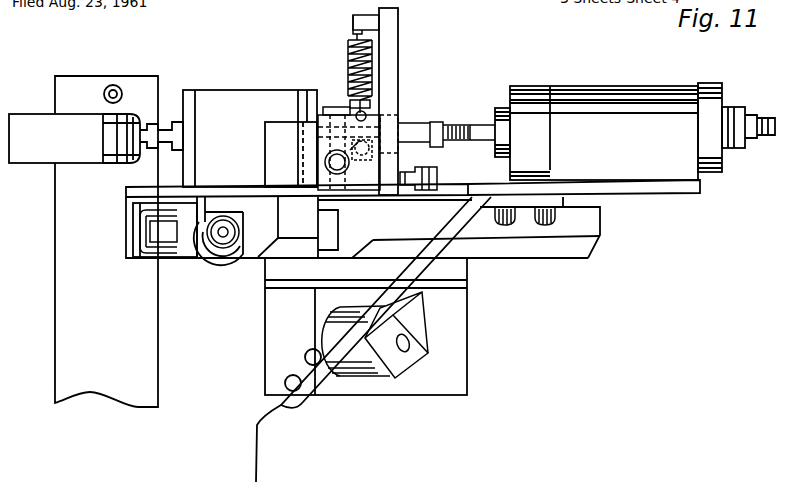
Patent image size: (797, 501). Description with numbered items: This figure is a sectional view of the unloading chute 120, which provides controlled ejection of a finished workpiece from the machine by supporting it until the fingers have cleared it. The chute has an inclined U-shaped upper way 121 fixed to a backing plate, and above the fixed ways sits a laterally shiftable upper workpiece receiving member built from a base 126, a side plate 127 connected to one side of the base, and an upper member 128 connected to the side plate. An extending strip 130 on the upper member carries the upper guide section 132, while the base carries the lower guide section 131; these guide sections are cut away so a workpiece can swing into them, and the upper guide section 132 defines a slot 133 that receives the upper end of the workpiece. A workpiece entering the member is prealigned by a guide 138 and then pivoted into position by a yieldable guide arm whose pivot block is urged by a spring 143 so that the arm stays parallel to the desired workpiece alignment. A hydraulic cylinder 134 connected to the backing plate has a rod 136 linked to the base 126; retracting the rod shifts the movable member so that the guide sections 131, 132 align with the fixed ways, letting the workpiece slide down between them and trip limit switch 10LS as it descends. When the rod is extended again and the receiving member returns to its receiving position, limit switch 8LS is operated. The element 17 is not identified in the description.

The limit switch 8LS is at (96, 138).
The limit switch 10LS is at (468, 359).
The guide bar 17 is at (140, 229).
The unloading chute 120 is at (560, 259).
The upper way 121 is at (413, 231).
The base 126 is at (229, 70).
The side plate 127 is at (398, 58).
The upper member 128 is at (277, 122).
The extending strip 130 is at (210, 186).
The lower guide section 131 is at (140, 262).
The upper guide section 132 is at (250, 258).
The slot 133 is at (234, 221).
The hydraulic cylinder 134 is at (587, 85).
The rod 136 is at (477, 123).
The guide 138 is at (260, 468).
The spring 143 is at (347, 68).